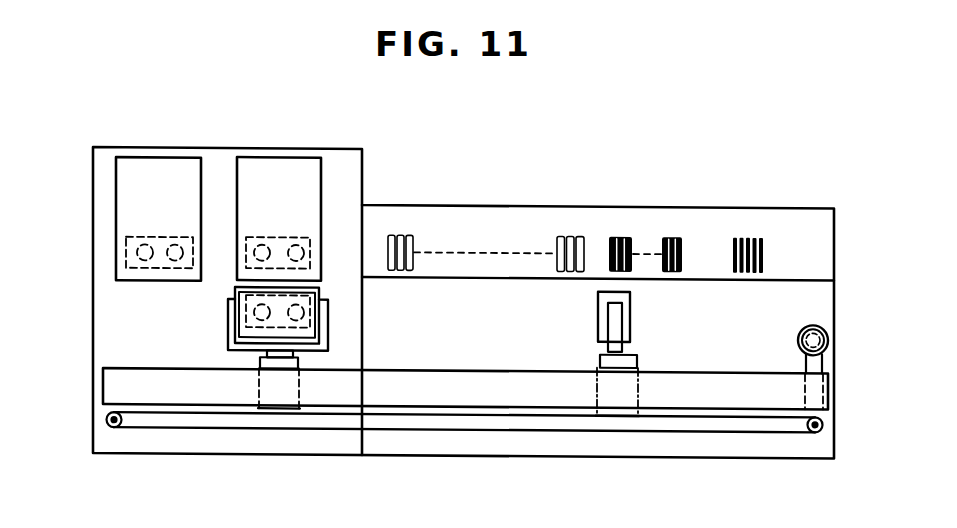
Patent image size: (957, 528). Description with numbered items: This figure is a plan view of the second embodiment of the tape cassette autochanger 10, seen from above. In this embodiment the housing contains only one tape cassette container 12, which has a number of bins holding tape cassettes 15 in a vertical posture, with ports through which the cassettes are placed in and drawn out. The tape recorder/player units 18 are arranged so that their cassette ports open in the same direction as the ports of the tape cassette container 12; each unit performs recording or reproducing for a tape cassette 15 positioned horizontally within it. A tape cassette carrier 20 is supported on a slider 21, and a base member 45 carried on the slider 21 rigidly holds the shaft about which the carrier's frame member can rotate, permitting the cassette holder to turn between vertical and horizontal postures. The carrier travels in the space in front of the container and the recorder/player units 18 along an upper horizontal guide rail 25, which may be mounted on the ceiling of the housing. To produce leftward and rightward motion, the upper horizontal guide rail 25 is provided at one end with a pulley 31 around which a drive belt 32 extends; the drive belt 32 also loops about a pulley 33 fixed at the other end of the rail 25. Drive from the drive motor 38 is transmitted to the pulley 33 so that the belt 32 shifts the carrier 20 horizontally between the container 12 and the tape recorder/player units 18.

The tape cassette autochanger 10 is at (240, 428).
The tape cassette container 12 is at (483, 221).
The tape cassette 15 is at (293, 235).
The tape recorder/player unit 18 is at (164, 168).
The tape cassette carrier 20 is at (239, 316).
The slider 21 is at (292, 408).
The upper horizontal guide rail 25 is at (470, 392).
The pulley 31 is at (114, 428).
The drive belt 32 is at (570, 430).
The pulley 33 is at (812, 428).
The drive motor 38 is at (810, 321).
The base member 45 is at (272, 356).